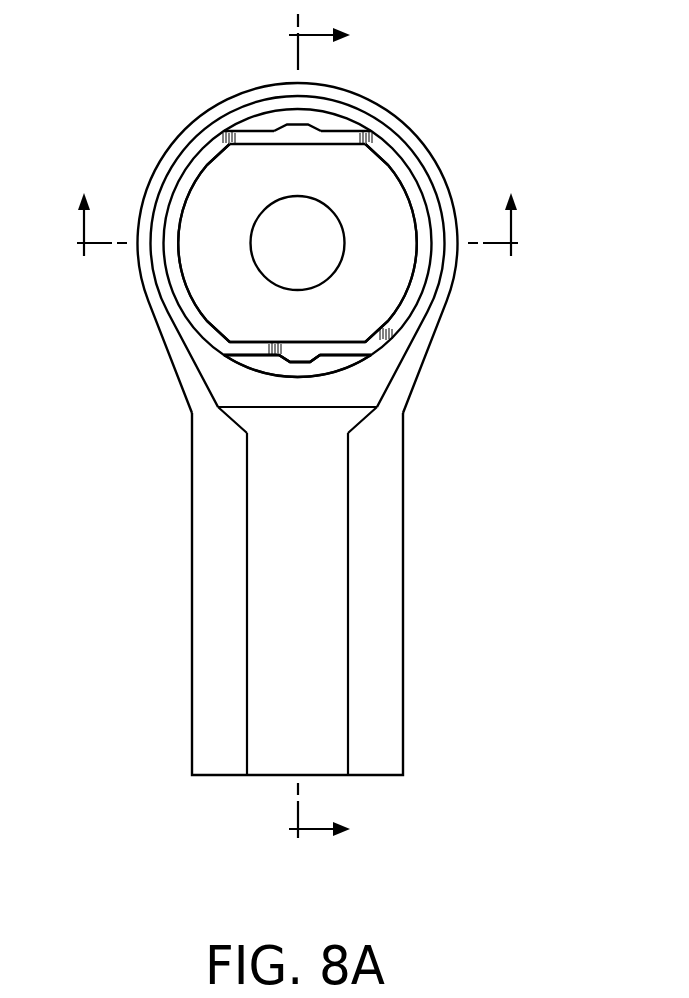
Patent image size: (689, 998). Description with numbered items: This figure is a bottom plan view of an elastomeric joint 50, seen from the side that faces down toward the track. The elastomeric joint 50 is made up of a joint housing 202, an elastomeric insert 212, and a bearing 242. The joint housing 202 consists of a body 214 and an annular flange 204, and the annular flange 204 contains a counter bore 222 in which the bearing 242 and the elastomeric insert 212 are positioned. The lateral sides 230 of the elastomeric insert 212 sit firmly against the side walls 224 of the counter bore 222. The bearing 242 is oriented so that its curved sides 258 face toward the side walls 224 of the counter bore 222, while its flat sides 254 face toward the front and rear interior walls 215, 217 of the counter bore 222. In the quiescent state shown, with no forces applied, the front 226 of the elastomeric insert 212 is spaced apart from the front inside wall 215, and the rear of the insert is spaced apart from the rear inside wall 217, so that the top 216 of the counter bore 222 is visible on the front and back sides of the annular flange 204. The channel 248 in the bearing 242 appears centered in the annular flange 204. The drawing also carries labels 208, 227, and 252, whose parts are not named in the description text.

The elastomeric joint 50 is at (510, 41).
The joint housing 202 is at (385, 545).
The annular flange 204 is at (372, 100).
The shoulder 208 is at (362, 388).
The elastomeric insert 212 is at (430, 197).
The body 214 is at (211, 660).
The front inside wall 215 is at (310, 107).
The top of the counter bore 216 is at (277, 121).
The rear inside wall 217 is at (298, 378).
The counter bore 222 is at (365, 358).
The side walls 224 is at (183, 223).
The front of the elastomeric insert 226 is at (297, 124).
The notch 227 is at (296, 373).
The lateral sides 230 is at (183, 187).
The bearing 242 is at (198, 267).
The channel 248 is at (318, 242).
The insert face 252 is at (363, 298).
The flat sides 254 is at (260, 143).
The curved sides 258 is at (207, 160).